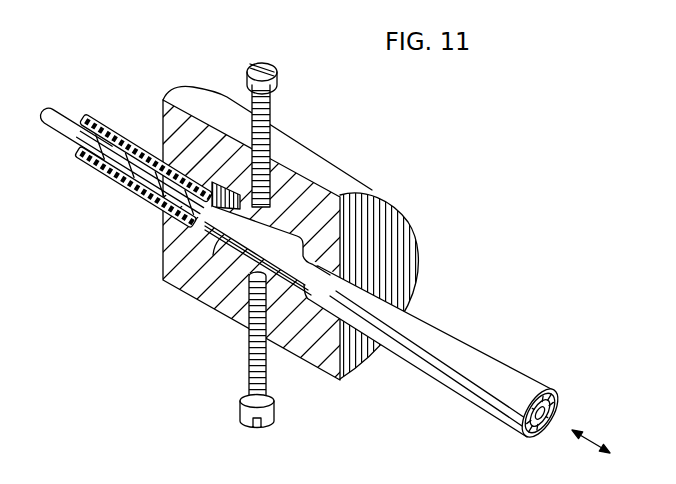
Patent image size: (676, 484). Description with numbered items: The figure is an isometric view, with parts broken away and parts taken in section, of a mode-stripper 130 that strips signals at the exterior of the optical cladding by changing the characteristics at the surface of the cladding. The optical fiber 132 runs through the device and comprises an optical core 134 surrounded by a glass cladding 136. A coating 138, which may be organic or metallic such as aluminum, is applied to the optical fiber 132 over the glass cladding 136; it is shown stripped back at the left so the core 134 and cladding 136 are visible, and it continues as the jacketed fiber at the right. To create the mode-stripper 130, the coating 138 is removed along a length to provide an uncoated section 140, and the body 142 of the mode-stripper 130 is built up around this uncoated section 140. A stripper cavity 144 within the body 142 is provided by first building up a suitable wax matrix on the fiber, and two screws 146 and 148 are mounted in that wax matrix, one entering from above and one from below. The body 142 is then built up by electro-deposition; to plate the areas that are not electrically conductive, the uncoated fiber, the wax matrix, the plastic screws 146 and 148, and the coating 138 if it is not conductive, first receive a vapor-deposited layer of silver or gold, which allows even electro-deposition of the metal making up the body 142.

The mode-stripper 130 is at (420, 164).
The optical fiber 132 is at (110, 195).
The optical core 134 is at (547, 430).
The glass cladding 136 is at (558, 400).
The coating 138 is at (131, 138).
The uncoated section 140 is at (215, 257).
The body 142 is at (402, 237).
The stripper cavity 144 is at (240, 257).
The screw 146 is at (273, 112).
The screw 148 is at (250, 382).